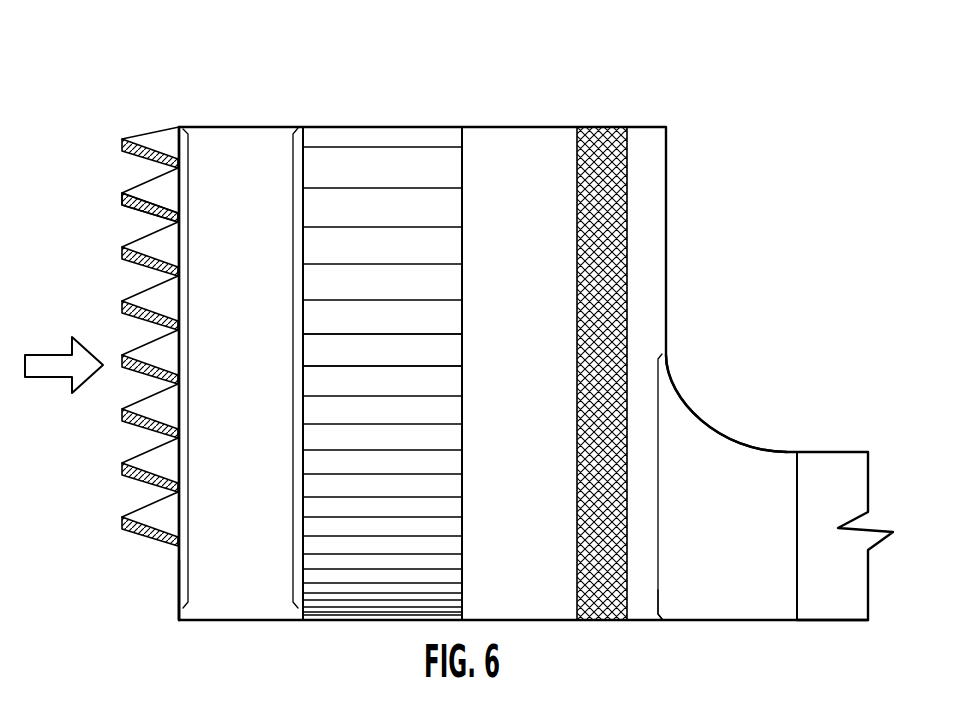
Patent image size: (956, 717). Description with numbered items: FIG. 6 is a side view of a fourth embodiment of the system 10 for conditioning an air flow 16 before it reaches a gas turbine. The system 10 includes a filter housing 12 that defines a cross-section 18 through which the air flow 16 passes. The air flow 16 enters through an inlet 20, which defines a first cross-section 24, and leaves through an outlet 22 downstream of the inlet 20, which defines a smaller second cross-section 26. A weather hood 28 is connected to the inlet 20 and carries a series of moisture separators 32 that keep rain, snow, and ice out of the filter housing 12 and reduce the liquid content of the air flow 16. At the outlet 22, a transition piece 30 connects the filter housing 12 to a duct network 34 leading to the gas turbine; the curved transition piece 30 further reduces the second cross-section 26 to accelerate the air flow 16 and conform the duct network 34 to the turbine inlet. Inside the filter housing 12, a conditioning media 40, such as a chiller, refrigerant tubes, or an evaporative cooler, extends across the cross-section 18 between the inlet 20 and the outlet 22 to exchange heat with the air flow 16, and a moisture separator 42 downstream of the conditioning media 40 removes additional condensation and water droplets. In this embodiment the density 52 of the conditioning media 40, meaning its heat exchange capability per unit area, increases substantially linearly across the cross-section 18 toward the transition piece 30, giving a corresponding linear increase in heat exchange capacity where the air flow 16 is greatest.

The system 10 is at (536, 322).
The filter housing 12 is at (548, 125).
The air flow 16 is at (53, 378).
The cross-section 18 is at (292, 366).
The inlet 20 is at (179, 573).
The outlet 22 is at (667, 588).
The first cross-section 24 is at (189, 361).
The second cross-section 26 is at (658, 481).
The weather hood 28 is at (155, 170).
The transition piece 30 is at (765, 447).
The moisture separator 32 is at (150, 200).
The duct network 34 is at (838, 613).
The conditioning media 40 is at (363, 127).
The moisture separator 42 is at (603, 127).
The density 52 is at (433, 343).